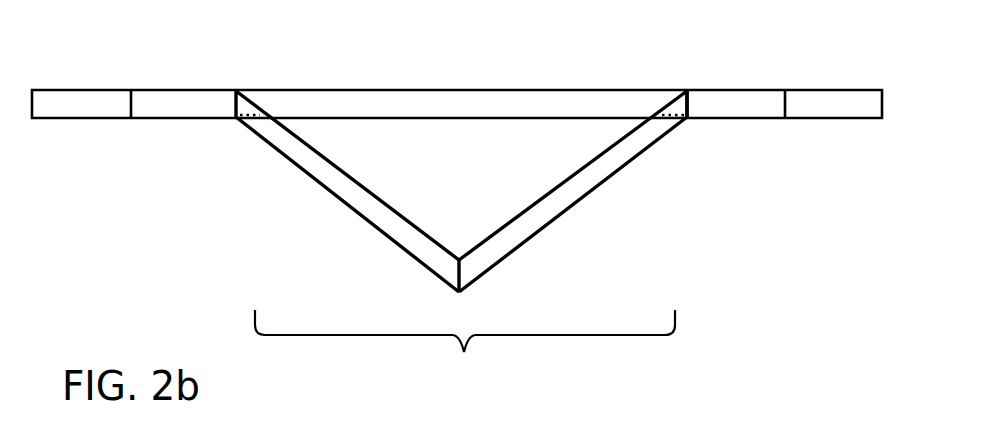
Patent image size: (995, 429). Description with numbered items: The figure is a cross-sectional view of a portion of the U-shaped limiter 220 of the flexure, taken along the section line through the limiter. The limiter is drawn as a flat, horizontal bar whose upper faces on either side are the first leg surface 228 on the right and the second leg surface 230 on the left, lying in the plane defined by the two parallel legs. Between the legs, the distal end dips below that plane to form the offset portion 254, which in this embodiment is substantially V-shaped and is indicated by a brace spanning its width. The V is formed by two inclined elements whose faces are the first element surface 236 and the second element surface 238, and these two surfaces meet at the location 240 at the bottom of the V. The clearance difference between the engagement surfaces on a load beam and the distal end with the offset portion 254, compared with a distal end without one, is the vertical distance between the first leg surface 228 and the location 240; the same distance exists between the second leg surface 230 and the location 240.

The second leg surface 230 is at (192, 89).
The first leg surface 228 is at (744, 89).
The second element surface 238 is at (357, 186).
The first element surface 236 is at (563, 187).
The location 240 is at (463, 260).
The U-shaped limiter 220 is at (658, 125).
The offset portion 254 is at (465, 349).